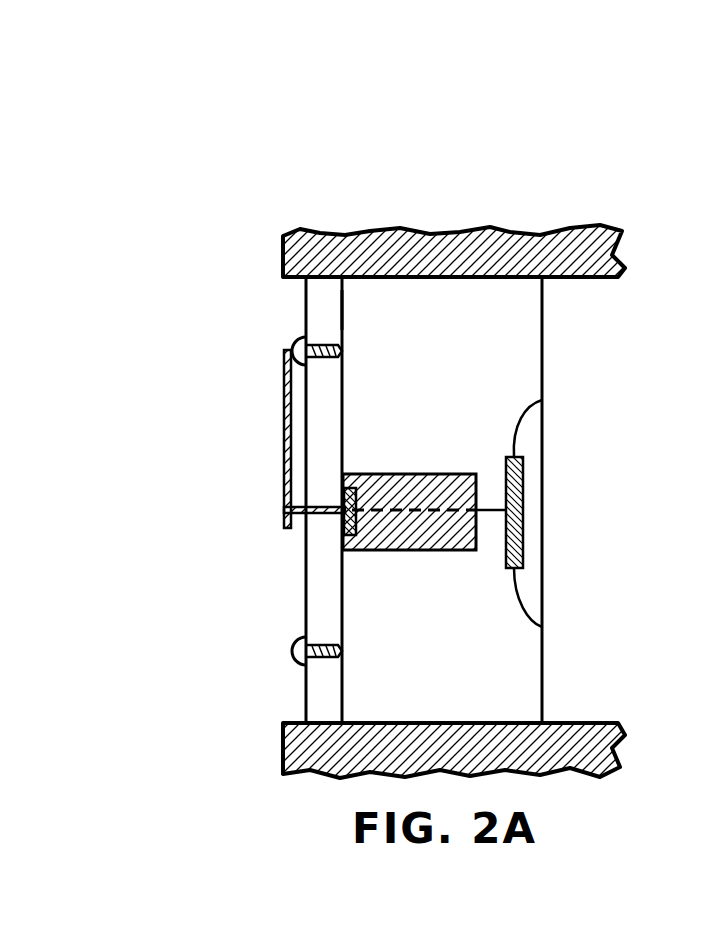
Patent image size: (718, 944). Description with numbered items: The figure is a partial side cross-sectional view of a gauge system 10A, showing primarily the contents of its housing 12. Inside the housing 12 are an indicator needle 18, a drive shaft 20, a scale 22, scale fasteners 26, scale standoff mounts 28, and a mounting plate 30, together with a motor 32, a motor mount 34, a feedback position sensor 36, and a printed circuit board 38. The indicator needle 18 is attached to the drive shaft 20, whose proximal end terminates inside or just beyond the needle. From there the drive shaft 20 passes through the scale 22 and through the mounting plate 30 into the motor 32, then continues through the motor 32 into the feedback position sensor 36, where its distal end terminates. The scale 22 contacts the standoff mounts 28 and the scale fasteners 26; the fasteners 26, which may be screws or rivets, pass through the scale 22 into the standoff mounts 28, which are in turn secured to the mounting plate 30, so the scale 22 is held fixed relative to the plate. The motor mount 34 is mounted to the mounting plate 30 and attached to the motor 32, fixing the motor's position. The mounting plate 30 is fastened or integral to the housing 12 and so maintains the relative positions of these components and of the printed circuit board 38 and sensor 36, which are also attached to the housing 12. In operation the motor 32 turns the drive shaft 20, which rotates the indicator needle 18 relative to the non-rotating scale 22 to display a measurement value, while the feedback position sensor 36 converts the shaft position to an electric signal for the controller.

The gauge system 10A is at (233, 116).
The housing 12 is at (514, 248).
The indicator needle 18 is at (290, 412).
The drive shaft 20 is at (323, 506).
The scale 22 is at (306, 580).
The scale fasteners 26 is at (294, 652).
The scale standoff mounts 28 is at (326, 347).
The mounting plate 30 is at (342, 312).
The motor 32 is at (447, 474).
The motor mount 34 is at (352, 497).
The feedback position sensor 36 is at (523, 470).
The printed circuit board 38 is at (543, 652).